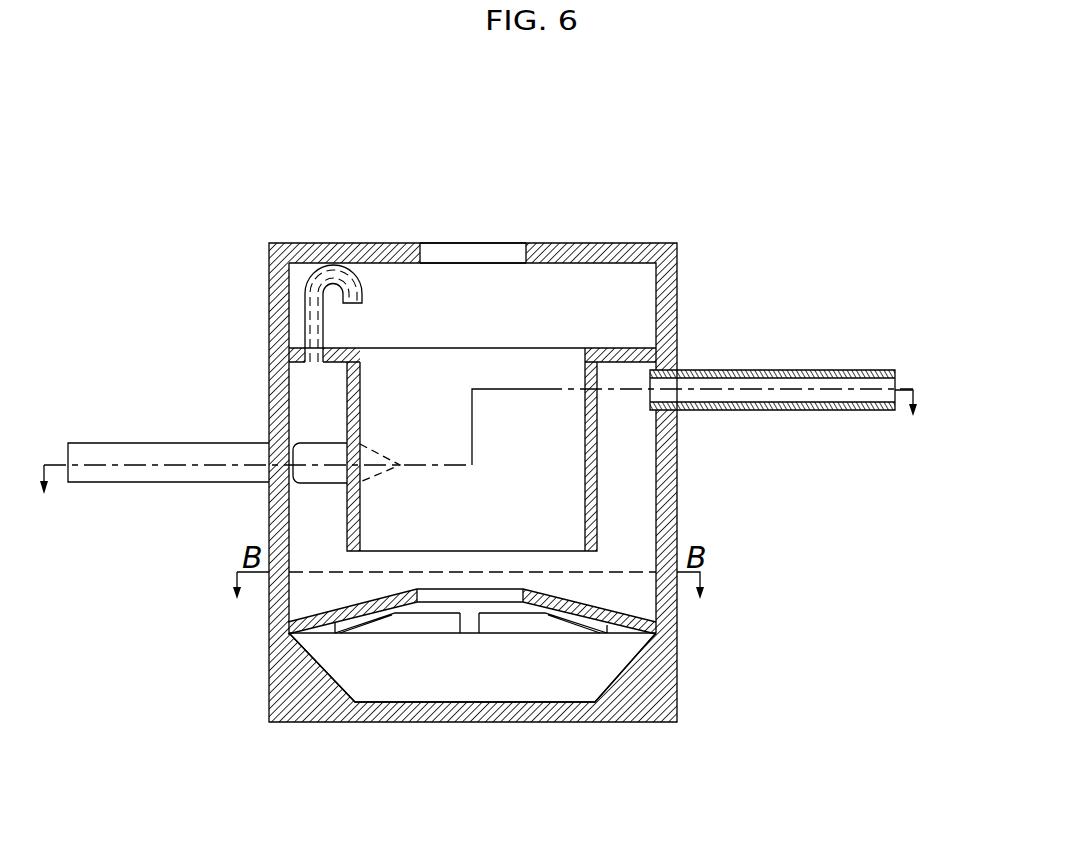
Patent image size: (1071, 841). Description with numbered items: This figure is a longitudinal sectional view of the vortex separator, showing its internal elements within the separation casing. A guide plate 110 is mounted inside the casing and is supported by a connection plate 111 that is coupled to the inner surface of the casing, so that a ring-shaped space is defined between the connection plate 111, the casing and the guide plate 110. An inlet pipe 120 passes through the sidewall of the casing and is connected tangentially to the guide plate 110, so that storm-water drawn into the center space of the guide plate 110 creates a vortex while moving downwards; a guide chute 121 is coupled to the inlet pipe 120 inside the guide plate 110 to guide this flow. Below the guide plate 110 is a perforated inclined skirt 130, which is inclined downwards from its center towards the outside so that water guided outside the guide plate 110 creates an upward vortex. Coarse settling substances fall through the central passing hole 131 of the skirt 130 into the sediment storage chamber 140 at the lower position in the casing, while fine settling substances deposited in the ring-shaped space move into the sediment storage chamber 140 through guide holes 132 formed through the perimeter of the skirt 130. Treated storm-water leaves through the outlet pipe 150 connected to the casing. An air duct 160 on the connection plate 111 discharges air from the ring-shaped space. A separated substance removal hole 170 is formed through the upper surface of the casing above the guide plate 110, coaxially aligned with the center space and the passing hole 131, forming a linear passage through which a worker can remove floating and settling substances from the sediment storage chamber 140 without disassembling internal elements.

The guide plate 110 is at (545, 490).
The connection plate 111 is at (622, 349).
The inlet pipe 120 is at (167, 468).
The guide chute 121 is at (400, 456).
The perforated inclined skirt 130 is at (598, 612).
The passing hole 131 is at (468, 593).
The guide holes 132 is at (529, 627).
The sediment storage chamber 140 is at (474, 685).
The outlet pipe 150 is at (792, 370).
The air duct 160 is at (316, 282).
The separated substance removal hole 170 is at (473, 250).